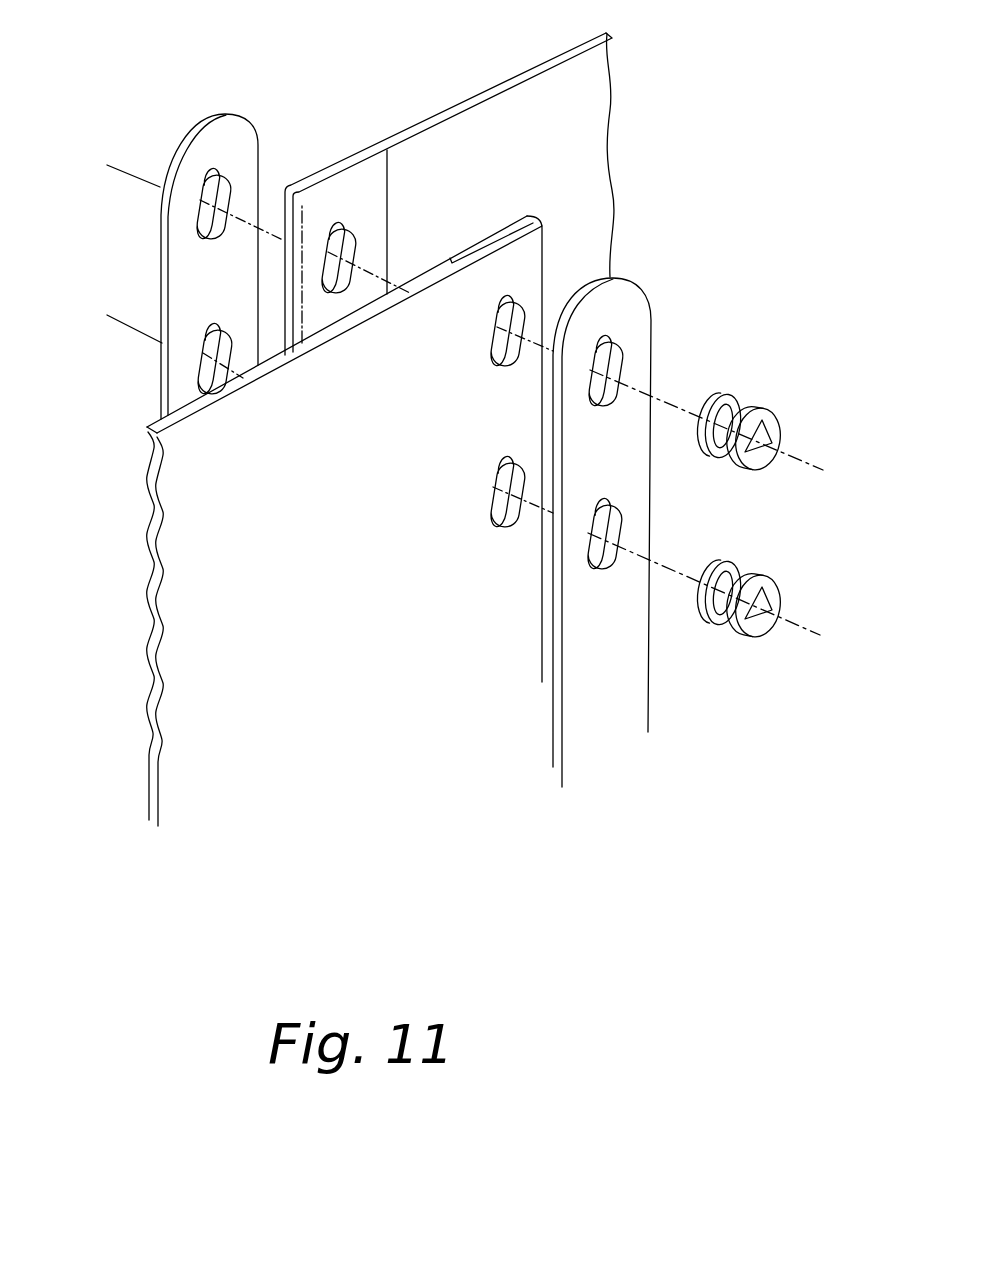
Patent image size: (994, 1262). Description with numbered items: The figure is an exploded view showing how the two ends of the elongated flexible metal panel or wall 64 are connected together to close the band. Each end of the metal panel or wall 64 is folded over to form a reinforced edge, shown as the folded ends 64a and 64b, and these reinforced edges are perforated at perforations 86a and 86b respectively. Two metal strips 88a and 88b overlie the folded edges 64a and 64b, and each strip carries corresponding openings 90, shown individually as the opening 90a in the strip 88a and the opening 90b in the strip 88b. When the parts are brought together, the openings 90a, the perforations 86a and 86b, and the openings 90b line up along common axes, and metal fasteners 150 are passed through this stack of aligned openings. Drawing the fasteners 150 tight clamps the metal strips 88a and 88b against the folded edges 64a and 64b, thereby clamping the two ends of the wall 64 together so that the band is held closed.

The metal panel or wall 64 is at (372, 551).
The folded-over end of metal panel 64a is at (532, 257).
The folded-over end of metal panel 64b is at (345, 187).
The perforation 86a is at (503, 467).
The perforation 86b is at (352, 258).
The metal strip 88a is at (640, 342).
The metal strip 88b is at (208, 114).
The openings 90 is at (683, 380).
The opening 90a is at (615, 433).
The opening 90b is at (203, 350).
The metal fastener 150 is at (783, 423).